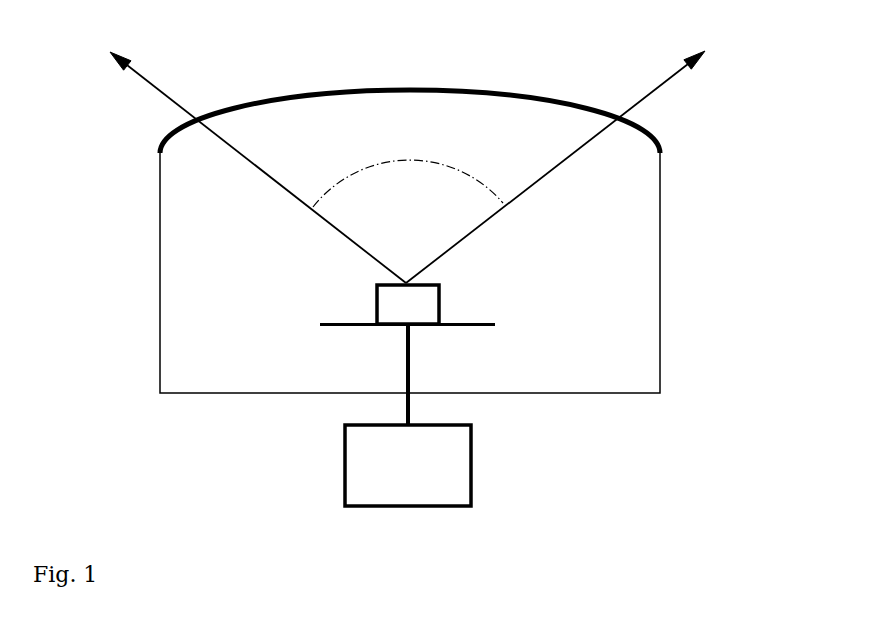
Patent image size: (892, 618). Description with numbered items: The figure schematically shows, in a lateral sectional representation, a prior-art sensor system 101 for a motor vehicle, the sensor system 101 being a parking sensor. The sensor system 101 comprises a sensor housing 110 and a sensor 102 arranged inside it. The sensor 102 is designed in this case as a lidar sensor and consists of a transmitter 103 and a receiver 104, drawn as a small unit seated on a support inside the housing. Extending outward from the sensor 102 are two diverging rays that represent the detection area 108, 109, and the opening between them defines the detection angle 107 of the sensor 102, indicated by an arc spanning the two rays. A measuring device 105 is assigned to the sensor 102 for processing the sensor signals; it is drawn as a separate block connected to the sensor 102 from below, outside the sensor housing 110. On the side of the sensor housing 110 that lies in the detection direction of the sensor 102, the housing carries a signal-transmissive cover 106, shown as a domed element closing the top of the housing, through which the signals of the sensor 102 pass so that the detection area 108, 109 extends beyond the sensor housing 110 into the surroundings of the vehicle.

The sensor system 101 is at (439, 273).
The sensor 102 is at (507, 325).
The transmitter 103 is at (385, 300).
The receiver 104 is at (363, 323).
The measuring device 105 is at (345, 465).
The signal-transmissive cover 106 is at (310, 92).
The detection angle 107 is at (460, 177).
The detection area 108 is at (218, 142).
The detection area 109 is at (592, 142).
The sensor housing 110 is at (160, 318).